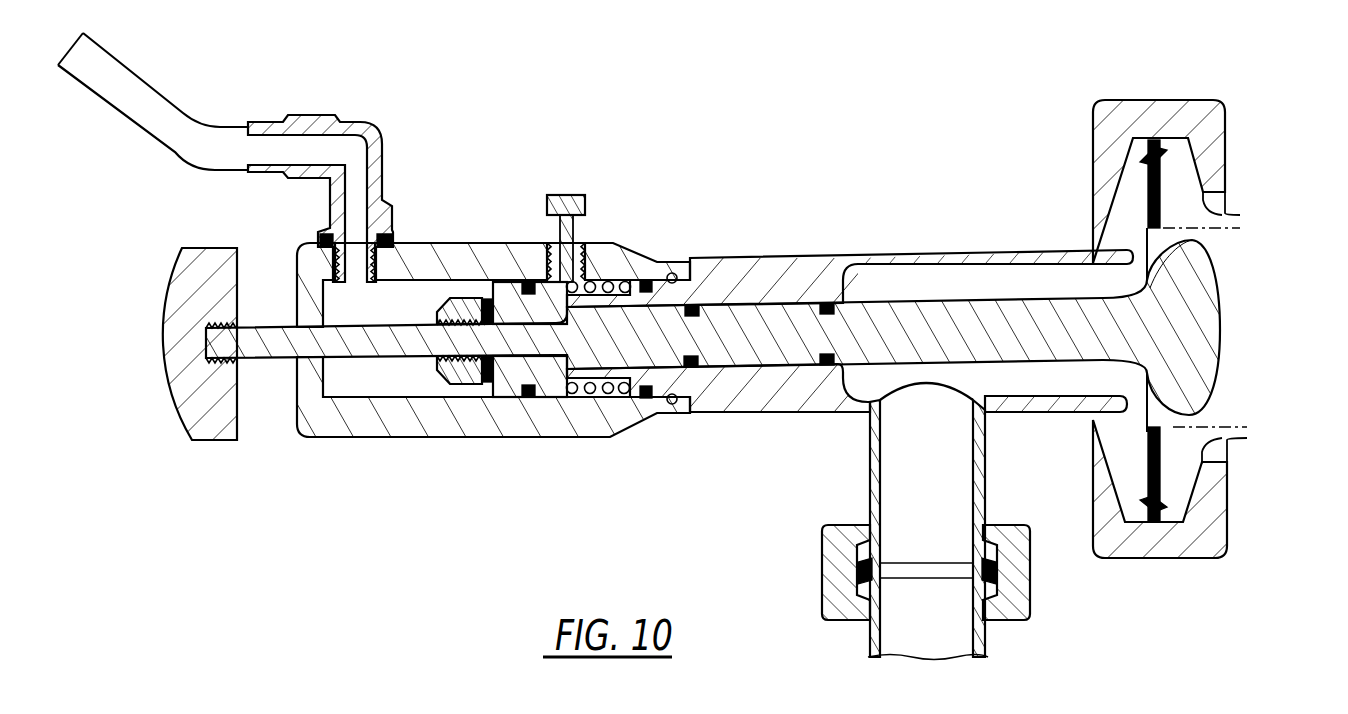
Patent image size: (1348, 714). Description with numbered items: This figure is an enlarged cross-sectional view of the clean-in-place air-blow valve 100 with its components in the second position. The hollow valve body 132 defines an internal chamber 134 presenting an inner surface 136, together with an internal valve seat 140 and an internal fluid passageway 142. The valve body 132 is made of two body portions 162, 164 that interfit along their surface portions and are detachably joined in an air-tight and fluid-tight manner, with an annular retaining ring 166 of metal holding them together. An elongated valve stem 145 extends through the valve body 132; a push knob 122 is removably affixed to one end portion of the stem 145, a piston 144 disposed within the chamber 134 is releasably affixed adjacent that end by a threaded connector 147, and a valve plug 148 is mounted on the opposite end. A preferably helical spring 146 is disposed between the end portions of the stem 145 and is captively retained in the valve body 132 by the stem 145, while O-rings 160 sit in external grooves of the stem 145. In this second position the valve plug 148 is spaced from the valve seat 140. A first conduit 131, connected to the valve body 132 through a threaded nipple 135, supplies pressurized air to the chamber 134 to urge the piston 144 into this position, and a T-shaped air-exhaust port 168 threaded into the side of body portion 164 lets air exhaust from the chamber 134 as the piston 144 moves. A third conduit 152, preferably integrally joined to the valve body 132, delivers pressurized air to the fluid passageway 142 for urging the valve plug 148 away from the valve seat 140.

The clean-in-place air-blow valve 100 is at (735, 70).
The push knob 122 is at (185, 252).
The first conduit 131 is at (183, 112).
The hollow valve body 132 is at (770, 238).
The internal chamber 134 is at (352, 390).
The threaded nipple 135 is at (373, 123).
The inner surface 136 is at (388, 398).
The internal valve seat 140 is at (1093, 256).
The internal fluid passageway 142 is at (878, 288).
The piston 144 is at (507, 293).
The elongated valve stem 145 is at (940, 316).
The spring 146 is at (587, 390).
The threaded connector 147 is at (450, 303).
The valve plug 148 is at (1212, 328).
The third conduit 152 is at (868, 504).
The O-rings 160 is at (810, 299).
The body portion 162 is at (700, 268).
The body portion 164 is at (605, 240).
The annular retaining ring 166 is at (672, 272).
The T-shaped air-exhaust port 168 is at (578, 193).